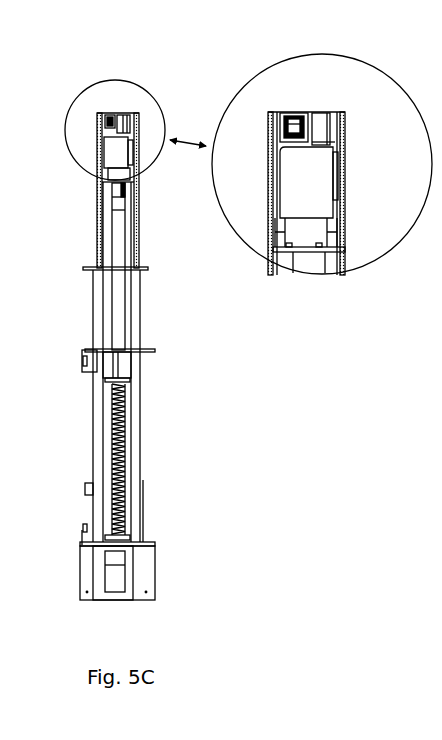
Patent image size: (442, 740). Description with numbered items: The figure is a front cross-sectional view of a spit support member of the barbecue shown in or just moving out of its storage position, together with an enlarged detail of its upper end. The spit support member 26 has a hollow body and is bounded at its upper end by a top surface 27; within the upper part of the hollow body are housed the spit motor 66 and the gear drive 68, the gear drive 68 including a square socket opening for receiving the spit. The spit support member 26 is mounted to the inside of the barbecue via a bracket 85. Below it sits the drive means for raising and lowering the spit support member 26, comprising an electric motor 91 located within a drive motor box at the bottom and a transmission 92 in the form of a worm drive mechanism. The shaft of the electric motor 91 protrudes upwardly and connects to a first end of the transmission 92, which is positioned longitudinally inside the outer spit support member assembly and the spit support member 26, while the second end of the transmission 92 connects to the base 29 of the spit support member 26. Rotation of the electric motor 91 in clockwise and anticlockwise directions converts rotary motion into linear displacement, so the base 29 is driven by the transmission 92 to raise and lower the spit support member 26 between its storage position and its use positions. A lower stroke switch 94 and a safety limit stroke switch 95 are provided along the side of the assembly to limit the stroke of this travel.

The second spit support member 26 is at (97, 213).
The top surface 27 is at (118, 113).
The base 29 is at (123, 367).
The spit motor 66 is at (115, 152).
The gear drive 68 is at (104, 116).
The bracket 85 is at (88, 349).
The electric motor 91 is at (112, 577).
The transmission 92 is at (125, 455).
The lower stroke switch 94 is at (81, 532).
The safety limit stroke switch 95 is at (85, 489).